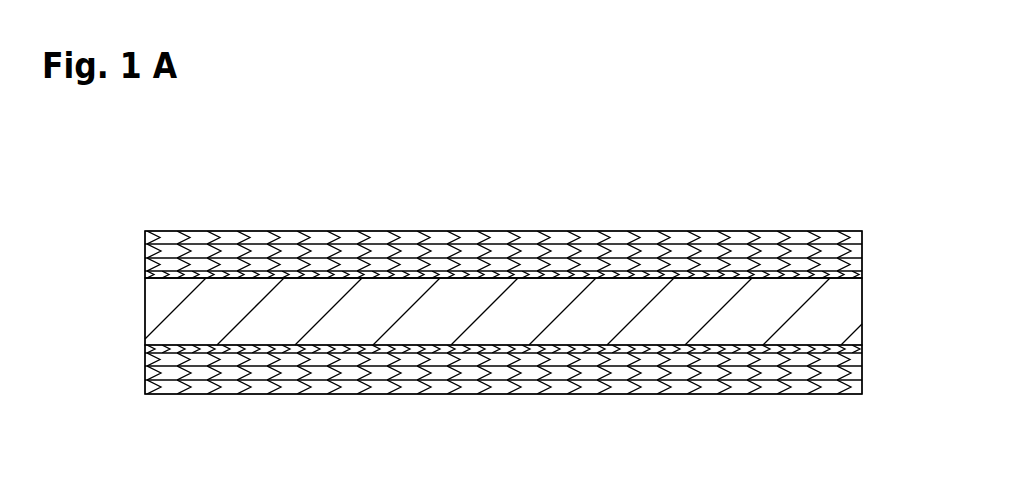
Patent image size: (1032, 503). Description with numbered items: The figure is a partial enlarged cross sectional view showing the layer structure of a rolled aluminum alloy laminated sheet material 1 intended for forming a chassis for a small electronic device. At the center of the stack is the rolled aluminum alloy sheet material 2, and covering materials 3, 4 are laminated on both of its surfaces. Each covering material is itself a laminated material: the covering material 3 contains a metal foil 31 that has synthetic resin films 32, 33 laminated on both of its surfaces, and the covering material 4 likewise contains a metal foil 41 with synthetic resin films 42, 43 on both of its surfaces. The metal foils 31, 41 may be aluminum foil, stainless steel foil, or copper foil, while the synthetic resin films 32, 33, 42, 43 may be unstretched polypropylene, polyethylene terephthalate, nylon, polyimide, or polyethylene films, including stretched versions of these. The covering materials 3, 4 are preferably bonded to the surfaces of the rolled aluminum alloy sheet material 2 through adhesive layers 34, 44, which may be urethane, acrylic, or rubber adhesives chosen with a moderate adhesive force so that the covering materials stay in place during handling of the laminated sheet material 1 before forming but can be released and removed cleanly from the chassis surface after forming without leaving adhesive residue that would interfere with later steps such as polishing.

The rolled aluminum alloy laminated sheet material 1 is at (603, 224).
The rolled aluminum alloy sheet material 2 is at (835, 312).
The covering material 3 is at (866, 345).
The covering material 4 is at (866, 231).
The metal foil 31 is at (342, 373).
The synthetic resin film 32 is at (240, 365).
The synthetic resin film 33 is at (445, 382).
The adhesive layer 34 is at (145, 335).
The metal foil 41 is at (348, 231).
The synthetic resin film 42 is at (462, 231).
The synthetic resin film 43 is at (245, 231).
The adhesive layer 44 is at (145, 281).